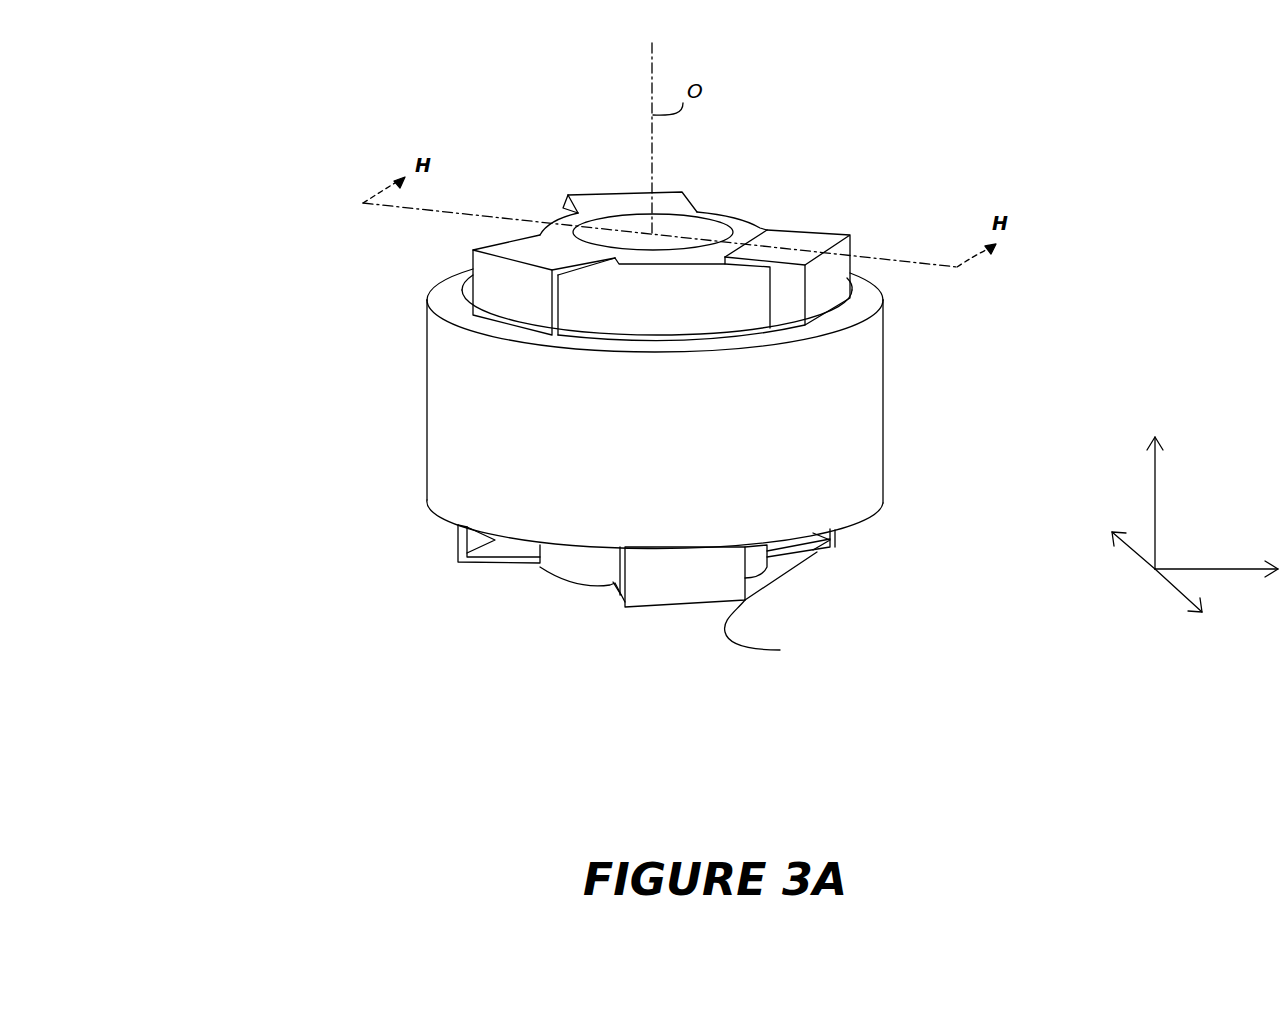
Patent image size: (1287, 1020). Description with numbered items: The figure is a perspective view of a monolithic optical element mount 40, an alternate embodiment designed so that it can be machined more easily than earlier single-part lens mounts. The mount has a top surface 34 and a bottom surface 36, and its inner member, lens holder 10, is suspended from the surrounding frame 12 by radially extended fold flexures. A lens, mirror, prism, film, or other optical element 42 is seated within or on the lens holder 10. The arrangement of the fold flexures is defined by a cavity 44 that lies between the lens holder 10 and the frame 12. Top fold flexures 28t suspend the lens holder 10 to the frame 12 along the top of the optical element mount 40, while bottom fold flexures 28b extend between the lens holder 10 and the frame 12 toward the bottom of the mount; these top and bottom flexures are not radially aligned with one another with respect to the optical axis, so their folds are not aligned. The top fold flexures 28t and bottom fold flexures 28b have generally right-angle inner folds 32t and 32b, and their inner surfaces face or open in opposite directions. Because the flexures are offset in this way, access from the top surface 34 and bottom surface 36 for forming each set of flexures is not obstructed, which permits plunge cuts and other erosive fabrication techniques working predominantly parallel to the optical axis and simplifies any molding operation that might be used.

The lens holder 10 is at (567, 203).
The frame 12 is at (487, 470).
The top fold flexure 28t is at (827, 250).
The bottom fold flexure 28b is at (655, 590).
The inner fold of top fold flexure 32t is at (806, 237).
The inner fold of bottom fold flexure 32b is at (483, 545).
The top surface 34 is at (430, 298).
The bottom surface 36 is at (463, 553).
The optical element mount 40 is at (1161, 149).
The optical element 42 is at (686, 227).
The cavity 44 is at (702, 337).